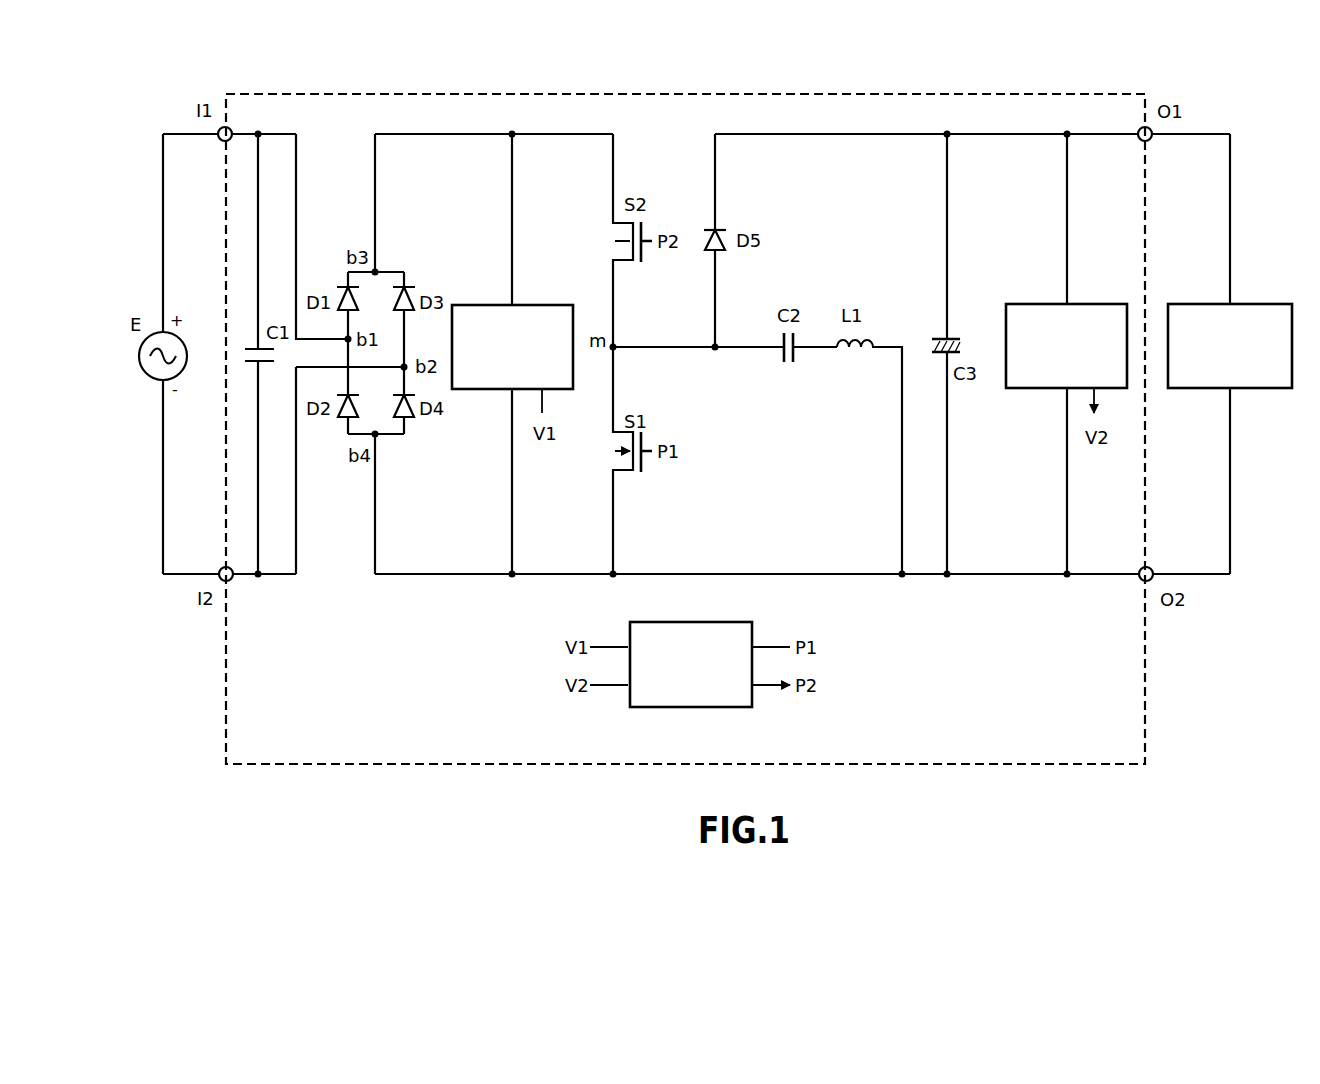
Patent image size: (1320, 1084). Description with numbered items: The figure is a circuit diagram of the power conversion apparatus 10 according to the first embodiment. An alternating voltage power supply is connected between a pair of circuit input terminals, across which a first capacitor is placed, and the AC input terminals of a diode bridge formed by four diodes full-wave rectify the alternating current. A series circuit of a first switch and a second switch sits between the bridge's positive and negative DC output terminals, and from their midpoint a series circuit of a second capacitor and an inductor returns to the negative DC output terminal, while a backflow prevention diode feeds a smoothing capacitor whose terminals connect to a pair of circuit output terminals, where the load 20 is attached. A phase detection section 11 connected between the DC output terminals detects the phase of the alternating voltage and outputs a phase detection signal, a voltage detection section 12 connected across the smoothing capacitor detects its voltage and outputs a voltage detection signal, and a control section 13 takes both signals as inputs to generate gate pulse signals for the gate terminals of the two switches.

The power conversion apparatus 10 is at (343, 93).
The phase detection section 11 is at (481, 305).
The voltage detection section 12 is at (1035, 304).
The control section 13 is at (695, 707).
The load 20 is at (1201, 304).